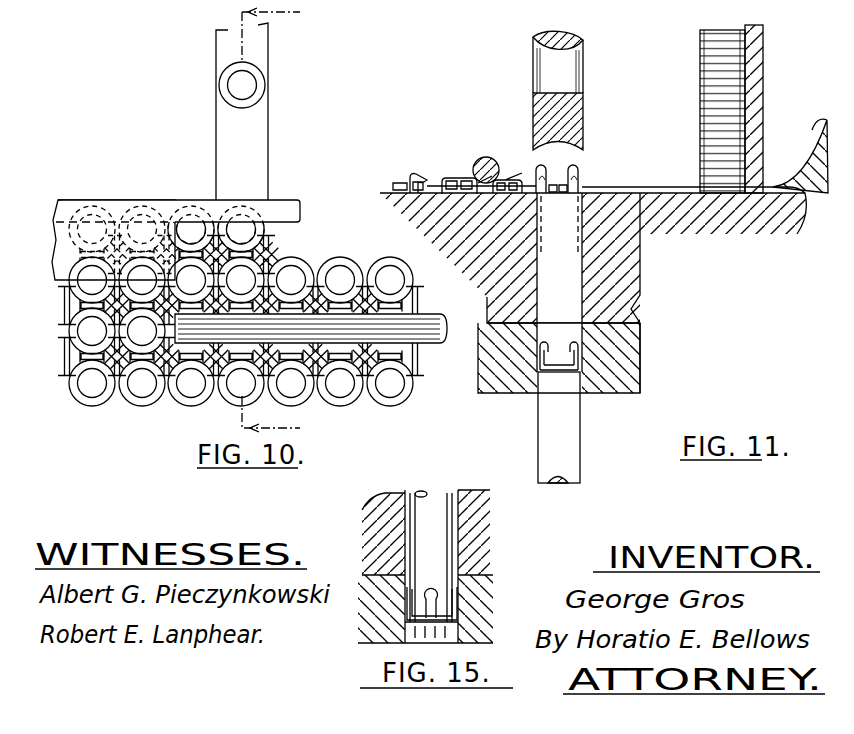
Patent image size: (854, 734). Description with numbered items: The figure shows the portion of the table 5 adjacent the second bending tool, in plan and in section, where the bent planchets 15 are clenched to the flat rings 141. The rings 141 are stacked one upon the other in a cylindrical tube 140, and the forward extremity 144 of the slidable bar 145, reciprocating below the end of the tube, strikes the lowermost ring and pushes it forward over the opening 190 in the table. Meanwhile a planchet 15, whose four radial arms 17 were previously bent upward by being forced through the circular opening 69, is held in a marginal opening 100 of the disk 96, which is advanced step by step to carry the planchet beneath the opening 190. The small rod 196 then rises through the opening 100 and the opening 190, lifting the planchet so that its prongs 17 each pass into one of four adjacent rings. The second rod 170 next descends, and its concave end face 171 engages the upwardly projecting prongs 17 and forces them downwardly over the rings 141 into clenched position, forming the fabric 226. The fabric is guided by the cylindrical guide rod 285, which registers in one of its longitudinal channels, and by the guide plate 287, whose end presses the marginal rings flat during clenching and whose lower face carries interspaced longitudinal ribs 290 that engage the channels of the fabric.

In FIG. 11, the table 5 is at (510, 278).
In FIG. 15, the table 5 is at (490, 528).
In FIG. 10, the planchet 15 is at (108, 354).
In FIG. 11, the planchet 15 is at (460, 186).
In FIG. 15, the planchet 15 is at (433, 618).
In FIG. 10, the radial arms 17 is at (262, 238).
In FIG. 11, the radial arms 17 is at (412, 175).
In FIG. 15, the circular opening 69 is at (400, 533).
In FIG. 11, the disk 96 is at (618, 392).
In FIG. 15, the disk 96 is at (487, 603).
In FIG. 11, the marginal opening 100 is at (520, 390).
In FIG. 15, the marginal opening 100 is at (404, 628).
In FIG. 11, the cylindrical tube 140 is at (760, 52).
In FIG. 10, the flat rings 141 is at (265, 89).
In FIG. 11, the flat rings 141 is at (715, 66).
In FIG. 10, the forward extremity of slidable bar 144 is at (230, 154).
In FIG. 11, the forward extremity of slidable bar 144 is at (675, 194).
In FIG. 11, the slidable bar 145 is at (822, 117).
In FIG. 11, the second rod 170 is at (570, 72).
In FIG. 11, the concave end face 171 is at (582, 118).
In FIG. 11, the opening 190 is at (584, 250).
In FIG. 11, the small rod 196 is at (560, 453).
In FIG. 10, the fabric 226 is at (146, 408).
In FIG. 10, the cylindrical guide rod 285 is at (432, 344).
In FIG. 11, the cylindrical guide rod 285 is at (487, 157).
In FIG. 10, the guide plate 287 is at (285, 210).
In FIG. 10, the ribs or flanges 290 is at (65, 200).